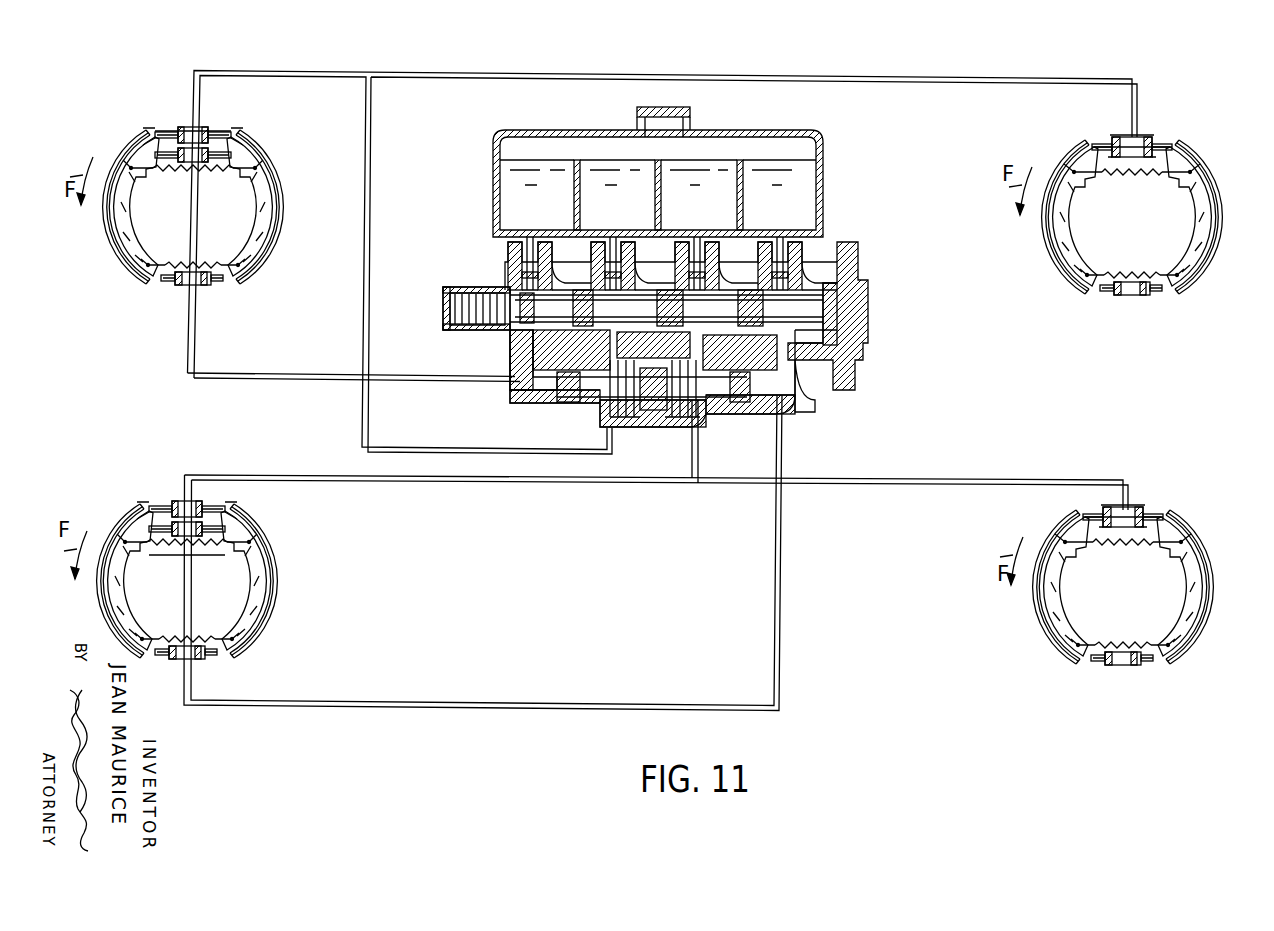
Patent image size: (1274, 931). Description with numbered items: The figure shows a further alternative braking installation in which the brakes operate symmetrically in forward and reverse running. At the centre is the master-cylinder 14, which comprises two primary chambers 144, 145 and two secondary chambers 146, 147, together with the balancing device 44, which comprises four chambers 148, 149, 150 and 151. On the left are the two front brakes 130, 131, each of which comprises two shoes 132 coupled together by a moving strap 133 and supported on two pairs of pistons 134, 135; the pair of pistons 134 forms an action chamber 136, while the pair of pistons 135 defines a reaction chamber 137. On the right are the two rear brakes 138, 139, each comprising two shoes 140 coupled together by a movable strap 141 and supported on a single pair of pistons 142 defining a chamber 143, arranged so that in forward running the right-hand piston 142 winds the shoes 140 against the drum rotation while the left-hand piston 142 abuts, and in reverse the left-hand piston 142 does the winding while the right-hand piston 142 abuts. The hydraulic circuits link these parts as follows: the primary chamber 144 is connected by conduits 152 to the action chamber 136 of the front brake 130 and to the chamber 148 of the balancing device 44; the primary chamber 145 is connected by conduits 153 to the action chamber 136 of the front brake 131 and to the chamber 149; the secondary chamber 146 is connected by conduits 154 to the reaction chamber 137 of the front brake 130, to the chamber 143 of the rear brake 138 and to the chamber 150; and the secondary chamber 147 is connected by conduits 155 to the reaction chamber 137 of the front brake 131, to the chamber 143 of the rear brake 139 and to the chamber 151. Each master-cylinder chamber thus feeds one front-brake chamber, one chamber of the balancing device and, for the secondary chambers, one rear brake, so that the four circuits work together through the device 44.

The master-cylinder 14 is at (680, 344).
The balancing device 44 is at (800, 418).
The front brake 130 is at (283, 214).
The front brake 131 is at (278, 598).
The shoes 132 is at (122, 255).
The moving strap 133 is at (185, 285).
The pistons 134 is at (180, 166).
The pistons 135 is at (176, 128).
The action chamber 136 is at (197, 162).
The reaction chamber 137 is at (190, 125).
The rear brake 138 is at (1222, 207).
The rear brake 139 is at (1218, 566).
The shoes 140 is at (1060, 242).
The movable strap 141 is at (1133, 295).
The pistons 142 is at (1118, 143).
The chamber 143 is at (1138, 145).
The primary chamber 144 is at (522, 295).
The primary chamber 145 is at (771, 295).
The secondary chamber 146 is at (598, 295).
The secondary chamber 147 is at (686, 295).
The chamber 148 is at (540, 388).
The chamber 149 is at (766, 400).
The chamber 150 is at (620, 415).
The chamber 151 is at (672, 415).
The conduits 152 is at (238, 384).
The conduits 153 is at (478, 703).
The conduits 154 is at (565, 74).
The conduits 155 is at (383, 482).